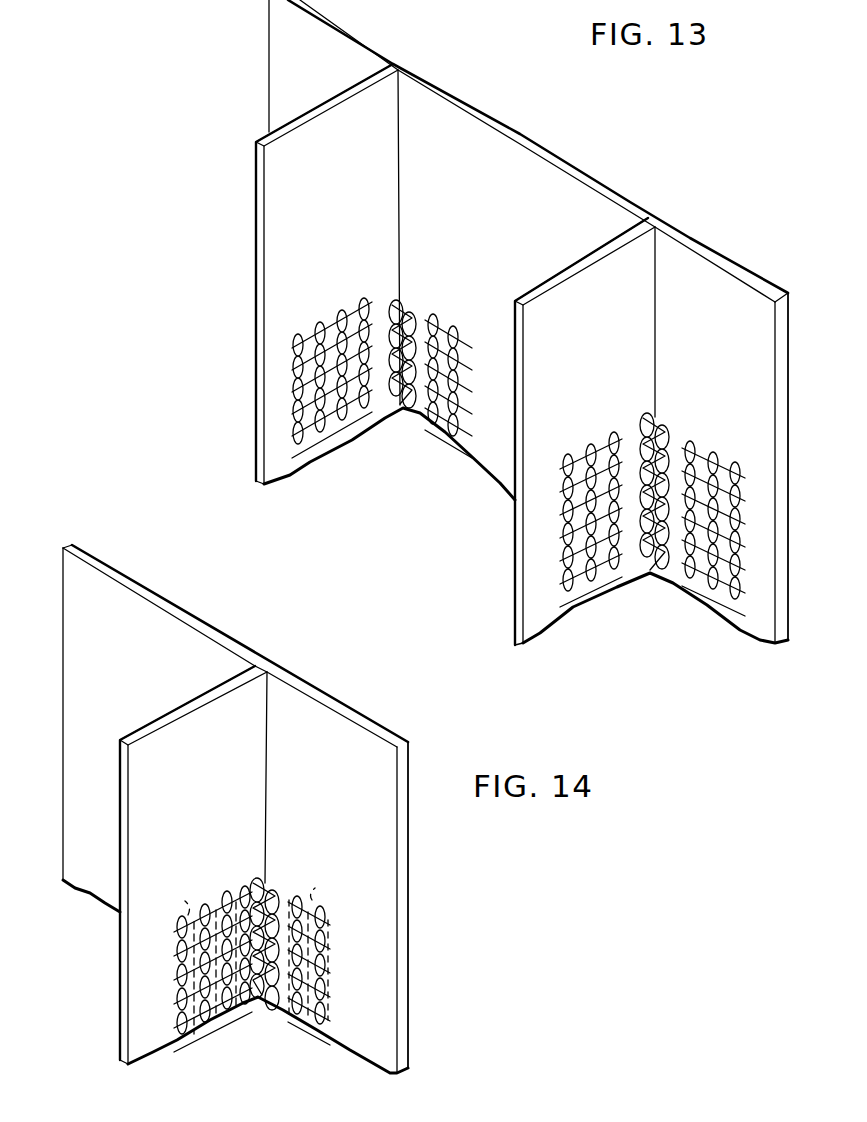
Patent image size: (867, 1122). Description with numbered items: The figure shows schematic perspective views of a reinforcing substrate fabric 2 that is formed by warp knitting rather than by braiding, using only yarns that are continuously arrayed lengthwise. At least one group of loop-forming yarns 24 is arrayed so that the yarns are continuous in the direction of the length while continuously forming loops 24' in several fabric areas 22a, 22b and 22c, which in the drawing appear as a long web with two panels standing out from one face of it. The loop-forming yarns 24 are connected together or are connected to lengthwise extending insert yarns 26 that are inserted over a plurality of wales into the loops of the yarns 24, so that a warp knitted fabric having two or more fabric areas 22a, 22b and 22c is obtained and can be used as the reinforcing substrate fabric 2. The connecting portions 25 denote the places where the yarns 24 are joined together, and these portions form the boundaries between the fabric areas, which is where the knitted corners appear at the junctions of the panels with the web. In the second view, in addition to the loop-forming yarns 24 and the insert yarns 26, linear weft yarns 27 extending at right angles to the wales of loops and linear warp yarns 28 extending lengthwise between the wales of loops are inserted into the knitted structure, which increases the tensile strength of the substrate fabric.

In FIG. 13, the reinforcing substrate fabric 2 is at (461, 88).
In FIG. 14, the reinforcing substrate fabric 2 is at (366, 703).
In FIG. 13, the fabric area 22a is at (535, 170).
In FIG. 13, the fabric area 22b is at (285, 210).
In FIG. 13, the fabric area 22c is at (535, 465).
In FIG. 13, the loop-forming yarns 24 is at (506, 488).
In FIG. 14, the loop-forming yarns 24 is at (265, 993).
In FIG. 13, the loops 24' is at (505, 478).
In FIG. 14, the loops 24' is at (261, 963).
In FIG. 13, the connecting portions 25 is at (403, 412).
In FIG. 14, the connecting portions 25 is at (265, 998).
In FIG. 13, the insert yarns 26 is at (335, 443).
In FIG. 14, the insert yarns 26 is at (207, 1023).
In FIG. 14, the linear weft yarns 27 is at (177, 946).
In FIG. 14, the linear warp yarns 28 is at (193, 917).